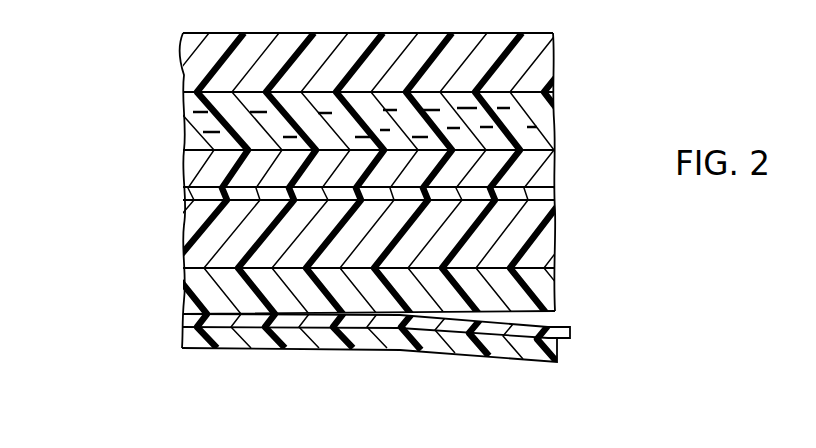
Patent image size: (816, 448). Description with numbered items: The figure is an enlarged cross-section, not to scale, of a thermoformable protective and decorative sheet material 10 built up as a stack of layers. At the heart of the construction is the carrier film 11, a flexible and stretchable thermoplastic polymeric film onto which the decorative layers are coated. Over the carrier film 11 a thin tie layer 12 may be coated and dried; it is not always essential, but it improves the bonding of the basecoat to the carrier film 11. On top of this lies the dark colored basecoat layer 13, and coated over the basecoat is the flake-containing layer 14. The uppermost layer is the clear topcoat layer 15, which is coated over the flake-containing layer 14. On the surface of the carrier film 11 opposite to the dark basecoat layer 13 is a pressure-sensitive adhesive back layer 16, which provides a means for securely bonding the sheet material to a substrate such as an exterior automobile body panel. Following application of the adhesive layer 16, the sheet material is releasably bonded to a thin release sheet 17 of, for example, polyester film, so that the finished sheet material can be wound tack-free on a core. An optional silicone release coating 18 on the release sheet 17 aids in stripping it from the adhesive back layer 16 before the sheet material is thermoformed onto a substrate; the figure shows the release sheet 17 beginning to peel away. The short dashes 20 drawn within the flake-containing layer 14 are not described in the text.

The thermoformable sheet material 10 is at (136, 178).
The carrier film 11 is at (556, 233).
The tie layer 12 is at (553, 196).
The dark colored basecoat layer 13 is at (553, 167).
The flake-containing layer 14 is at (553, 118).
The clear topcoat layer 15 is at (553, 62).
The pressure-sensitive adhesive back layer 16 is at (556, 288).
The release sheet 17 is at (541, 362).
The silicone release coating 18 is at (571, 332).
The indicia 20 is at (188, 121).